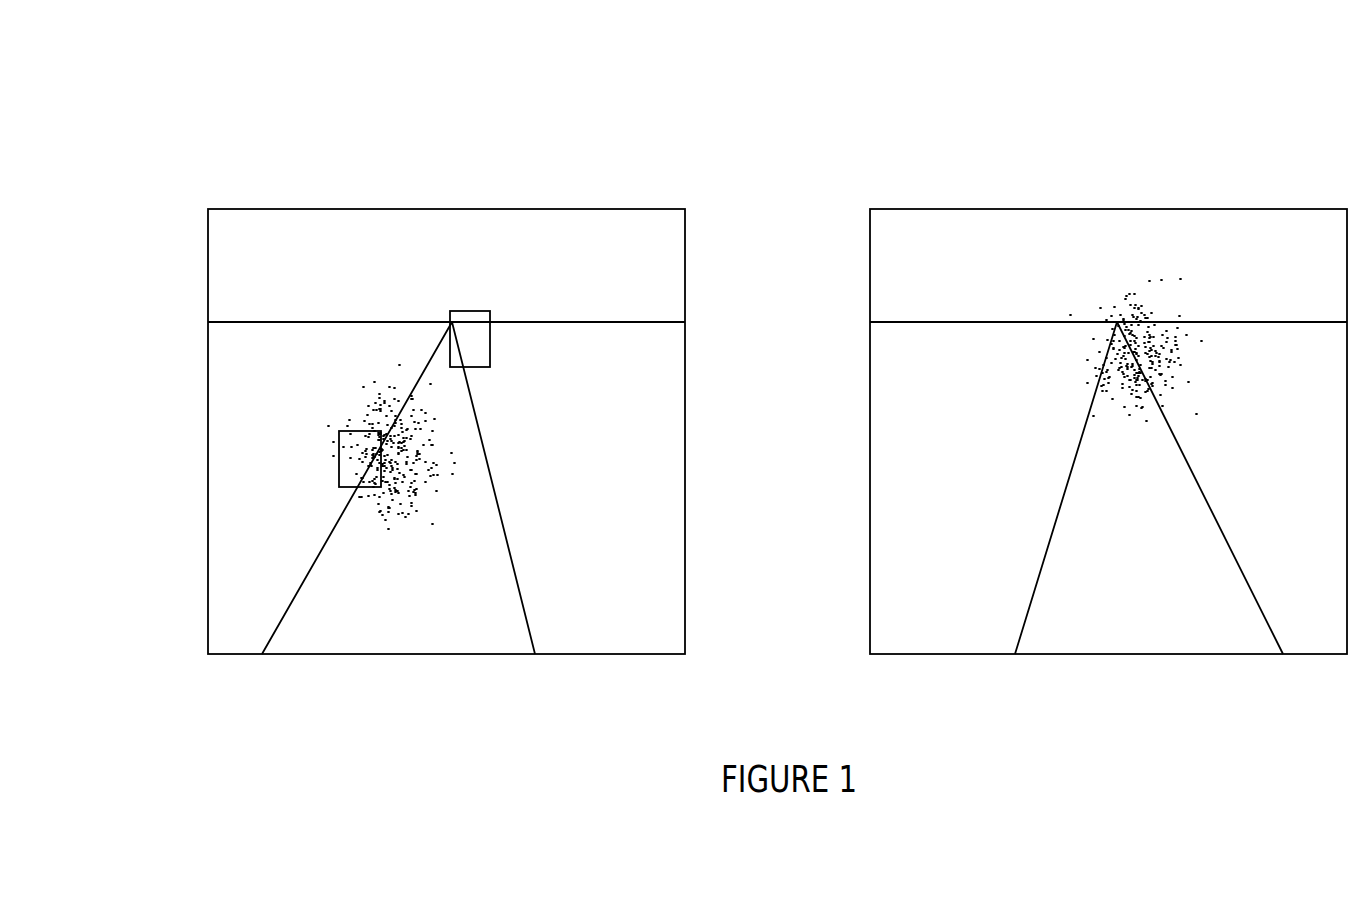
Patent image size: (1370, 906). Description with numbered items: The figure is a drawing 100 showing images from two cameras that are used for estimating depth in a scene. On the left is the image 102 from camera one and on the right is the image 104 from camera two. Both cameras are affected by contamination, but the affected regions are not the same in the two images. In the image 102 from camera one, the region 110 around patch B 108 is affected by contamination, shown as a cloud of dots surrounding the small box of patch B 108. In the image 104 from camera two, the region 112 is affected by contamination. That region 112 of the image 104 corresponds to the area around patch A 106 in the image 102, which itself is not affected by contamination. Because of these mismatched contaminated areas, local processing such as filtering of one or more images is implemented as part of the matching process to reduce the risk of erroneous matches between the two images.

The drawing 100 is at (237, 42).
The image from camera 1 102 is at (437, 138).
The image from camera 2 104 is at (1116, 137).
The patch A 106 is at (459, 297).
The patch B 108 is at (336, 419).
The region around patch B 110 is at (349, 370).
The region affected by contamination 112 is at (1076, 288).